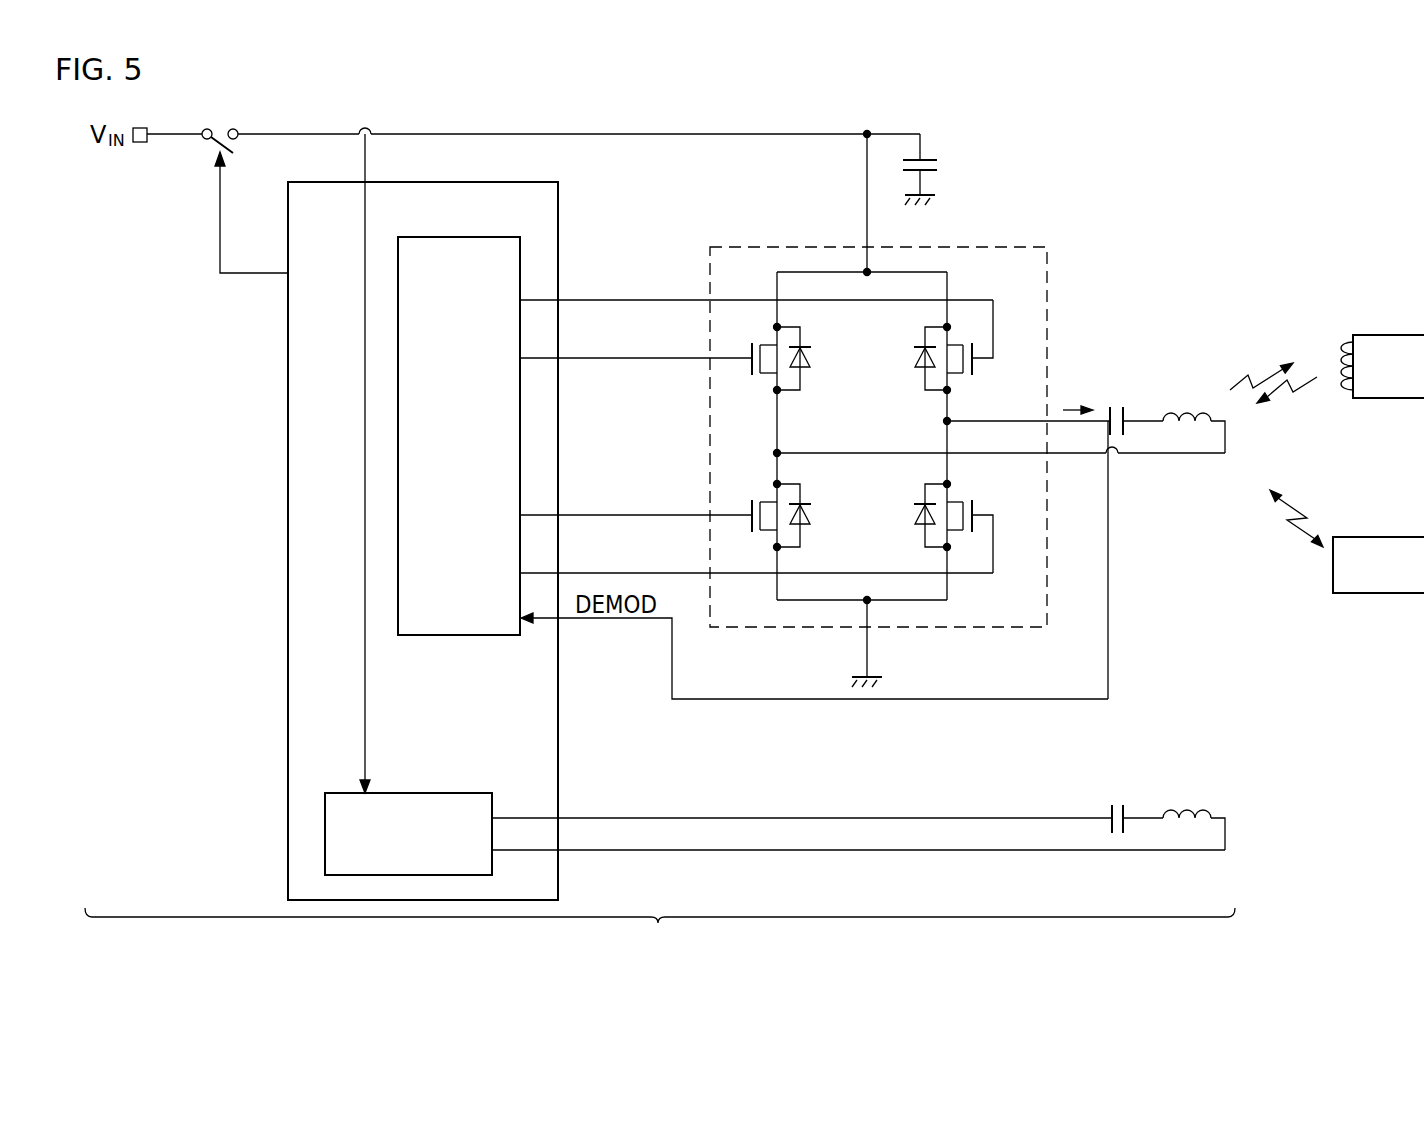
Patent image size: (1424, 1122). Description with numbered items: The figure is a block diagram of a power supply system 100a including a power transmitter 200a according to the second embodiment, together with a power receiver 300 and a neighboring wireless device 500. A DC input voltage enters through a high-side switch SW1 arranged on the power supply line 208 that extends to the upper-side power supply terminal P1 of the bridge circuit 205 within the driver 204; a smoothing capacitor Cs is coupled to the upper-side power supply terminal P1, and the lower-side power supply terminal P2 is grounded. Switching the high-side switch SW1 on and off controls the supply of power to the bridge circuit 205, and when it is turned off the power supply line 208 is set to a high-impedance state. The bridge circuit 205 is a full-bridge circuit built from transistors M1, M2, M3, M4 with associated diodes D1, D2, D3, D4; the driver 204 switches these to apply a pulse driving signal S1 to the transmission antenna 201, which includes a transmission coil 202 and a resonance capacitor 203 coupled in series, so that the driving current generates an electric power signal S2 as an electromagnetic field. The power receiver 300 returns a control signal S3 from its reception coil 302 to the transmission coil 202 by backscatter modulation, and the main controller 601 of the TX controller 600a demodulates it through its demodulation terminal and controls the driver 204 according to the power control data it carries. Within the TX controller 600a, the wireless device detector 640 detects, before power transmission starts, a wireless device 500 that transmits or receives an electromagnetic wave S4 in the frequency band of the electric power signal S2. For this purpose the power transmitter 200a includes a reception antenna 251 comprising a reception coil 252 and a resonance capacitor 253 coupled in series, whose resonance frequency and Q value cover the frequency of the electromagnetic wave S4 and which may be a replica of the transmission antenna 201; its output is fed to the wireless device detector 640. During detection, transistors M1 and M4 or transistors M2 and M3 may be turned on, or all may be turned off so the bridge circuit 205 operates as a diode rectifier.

The power supply system 100a is at (1338, 91).
The power supply line 208 is at (640, 130).
The TX controller 600a is at (288, 690).
The main controller 601 is at (487, 221).
The wireless device detector 640 is at (454, 778).
The driver 204 is at (1028, 229).
The bridge circuit 205 is at (962, 289).
The transmission antenna 201 is at (1156, 380).
The transmission coil 202 is at (1190, 403).
The resonance capacitor 203 is at (1119, 403).
The reception antenna 251 is at (1156, 777).
The reception coil 252 is at (1190, 801).
The resonance capacitor 253 is at (1119, 801).
The power receiver 300 is at (1387, 335).
The reception coil 302 is at (1338, 340).
The wireless device 500 is at (1385, 596).
The power transmitter 200a is at (660, 933).
The high-side switch SW1 is at (221, 121).
The smoothing capacitor Cs is at (938, 165).
The upper-side power supply terminal P1 is at (851, 230).
The lower-side power supply terminal P2 is at (853, 644).
The transistor M1 is at (746, 381).
The transistor M2 is at (972, 378).
The transistor M3 is at (753, 494).
The transistor M4 is at (972, 487).
The diode D1 is at (817, 353).
The diode D2 is at (906, 367).
The diode D3 is at (817, 510).
The diode D4 is at (906, 528).
The driving signal S1 is at (1080, 397).
The electric power signal S2 is at (1261, 365).
The control signal S3 is at (1287, 407).
The electromagnetic wave S4 is at (1293, 524).